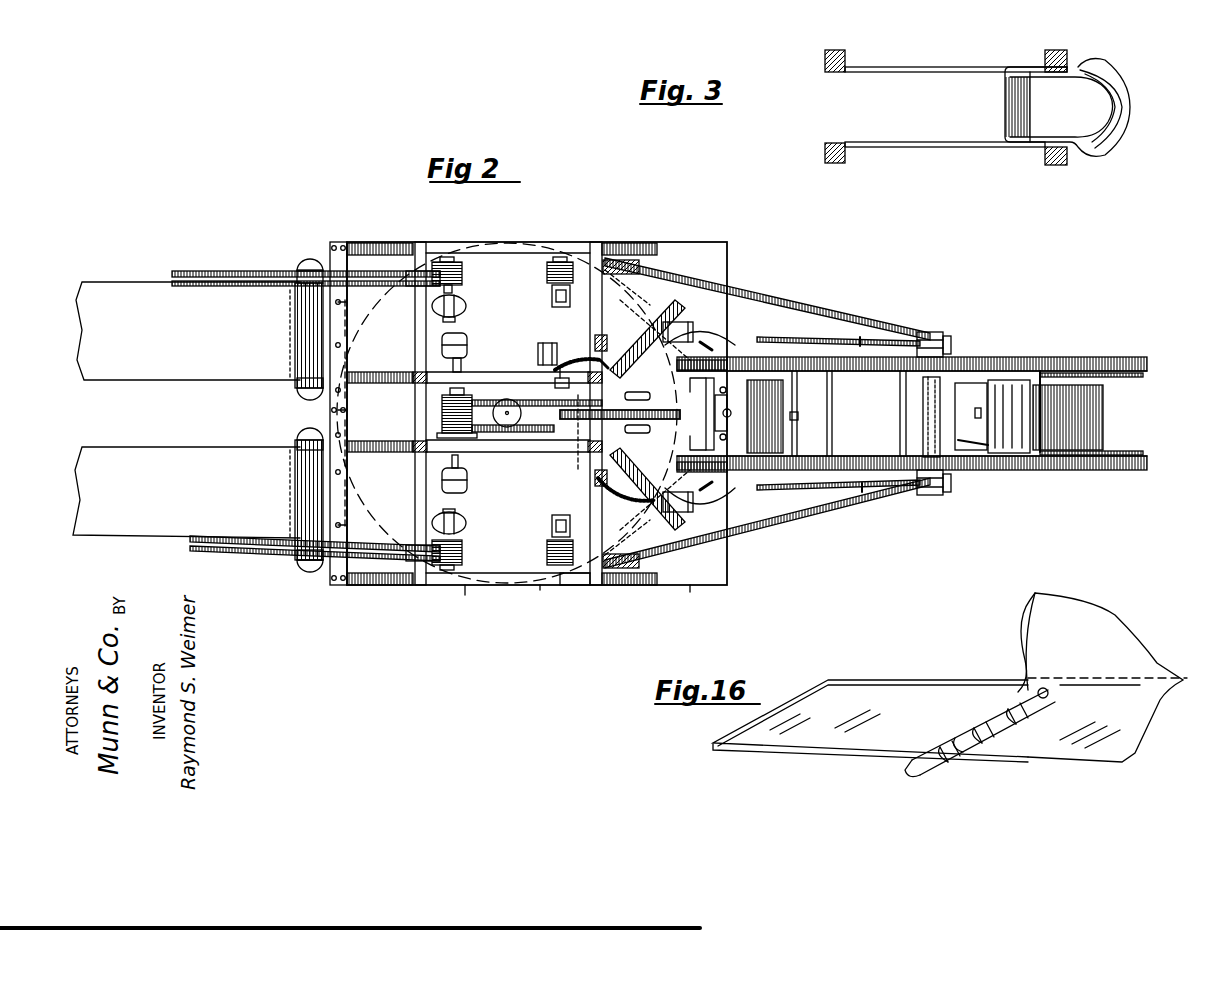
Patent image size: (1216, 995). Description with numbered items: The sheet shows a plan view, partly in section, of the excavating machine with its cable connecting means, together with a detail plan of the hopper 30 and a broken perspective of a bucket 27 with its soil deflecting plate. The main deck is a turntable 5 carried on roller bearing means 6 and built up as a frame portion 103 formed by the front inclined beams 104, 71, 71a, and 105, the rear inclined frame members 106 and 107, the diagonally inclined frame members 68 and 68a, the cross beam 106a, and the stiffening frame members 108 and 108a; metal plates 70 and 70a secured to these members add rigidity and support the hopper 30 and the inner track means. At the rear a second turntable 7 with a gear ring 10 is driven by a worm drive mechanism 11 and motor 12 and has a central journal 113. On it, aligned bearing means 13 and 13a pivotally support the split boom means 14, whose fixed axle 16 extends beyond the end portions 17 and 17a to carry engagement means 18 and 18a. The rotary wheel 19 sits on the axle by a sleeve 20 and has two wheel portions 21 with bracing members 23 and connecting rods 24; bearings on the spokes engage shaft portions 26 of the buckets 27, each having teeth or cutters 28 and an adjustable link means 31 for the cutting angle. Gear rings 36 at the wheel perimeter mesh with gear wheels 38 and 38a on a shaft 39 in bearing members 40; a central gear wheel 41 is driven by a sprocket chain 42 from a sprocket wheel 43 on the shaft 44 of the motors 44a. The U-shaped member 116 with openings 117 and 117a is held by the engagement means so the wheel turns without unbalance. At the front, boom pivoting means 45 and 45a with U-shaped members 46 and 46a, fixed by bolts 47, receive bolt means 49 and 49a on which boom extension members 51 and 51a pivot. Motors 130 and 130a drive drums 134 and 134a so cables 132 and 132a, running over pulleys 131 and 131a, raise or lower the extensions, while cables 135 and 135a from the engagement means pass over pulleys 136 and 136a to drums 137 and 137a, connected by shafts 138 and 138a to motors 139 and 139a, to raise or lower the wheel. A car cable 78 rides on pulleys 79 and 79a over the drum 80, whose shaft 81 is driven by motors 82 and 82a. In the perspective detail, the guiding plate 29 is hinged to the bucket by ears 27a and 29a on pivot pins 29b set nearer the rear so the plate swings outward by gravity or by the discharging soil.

In FIG. 2, the turntable 5 is at (690, 585).
In FIG. 2, the roller bearing means 6 is at (465, 590).
In FIG. 2, the second turntable 7 is at (578, 462).
In FIG. 2, the gear ring 10 is at (585, 482).
In FIG. 2, the worm drive mechanism 11 is at (536, 420).
In FIG. 2, the motor 12 is at (538, 355).
In FIG. 2, the bearing means 13 is at (699, 502).
In FIG. 2, the bearing means 13a is at (680, 330).
In FIG. 2, the split boom means 14 is at (822, 337).
In FIG. 2, the fixed axle 16 is at (923, 398).
In FIG. 2, the split boom end portion 17 is at (862, 487).
In FIG. 2, the split boom end portion 17a is at (860, 340).
In FIG. 2, the engagement means 18 is at (950, 490).
In FIG. 2, the engagement means 18a is at (950, 338).
In FIG. 2, the rotary wheel 19 is at (1066, 348).
In FIG. 2, the sleeve 20 is at (930, 432).
In FIG. 2, the wheel portions 21 is at (1147, 462).
In FIG. 2, the bracing members 23 is at (870, 456).
In FIG. 2, the connecting rods 24 is at (832, 420).
In FIG. 2, the shaft portions 26 is at (1040, 458).
In FIG. 2, the bucket 27 is at (1103, 418).
In FIG. 16, the bucket 27 is at (1088, 650).
In FIG. 16, the ears 27a is at (1020, 720).
In FIG. 2, the teeth or cutters 28 is at (1020, 420).
In FIG. 2, the guiding plate 29 is at (985, 437).
In FIG. 16, the guiding plate 29 is at (880, 696).
In FIG. 16, the ears 29a is at (1000, 745).
In FIG. 16, the pivot pins 29b is at (1045, 690).
In FIG. 3, the hopper 30 is at (1132, 107).
In FIG. 2, the adjustable link means 31 is at (975, 413).
In FIG. 2, the gear rings 36 is at (1102, 470).
In FIG. 2, the gear wheel 38 is at (677, 466).
In FIG. 2, the gear wheel 38a is at (677, 365).
In FIG. 2, the shaft 39 is at (726, 406).
In FIG. 2, the bearing members 40 is at (715, 485).
In FIG. 2, the gear wheel 41 is at (725, 417).
In FIG. 2, the sprocket chain 42 is at (690, 420).
In FIG. 2, the sprocket wheel 43 is at (567, 377).
In FIG. 2, the shaft 44 is at (614, 379).
In FIG. 2, the motors 44a is at (635, 480).
In FIG. 2, the boom pivoting means 45 is at (311, 575).
In FIG. 2, the boom pivoting means 45a is at (313, 250).
In FIG. 2, the U-shaped member 46 is at (320, 497).
In FIG. 2, the U-shaped member 46a is at (320, 326).
In FIG. 2, the bolts 47 is at (358, 524).
In FIG. 2, the bolt means 49 is at (300, 435).
In FIG. 2, the bolt means 49a is at (305, 398).
In FIG. 2, the boom extension member 51 is at (154, 478).
In FIG. 2, the boom extension member 51a is at (146, 350).
In FIG. 2, the frame member 68 is at (599, 483).
In FIG. 3, the frame member 68 is at (1058, 165).
In FIG. 2, the frame member 68a is at (596, 348).
In FIG. 3, the frame member 68a is at (1056, 50).
In FIG. 3, the plate 70 is at (947, 147).
In FIG. 3, the plate 70a is at (943, 67).
In FIG. 2, the frame member 71 is at (415, 448).
In FIG. 3, the frame member 71 is at (836, 163).
In FIG. 2, the frame member 71a is at (412, 380).
In FIG. 3, the frame member 71a is at (835, 50).
In FIG. 2, the cable 78 is at (442, 413).
In FIG. 2, the pulley 79 is at (632, 438).
In FIG. 2, the pulley 79a is at (647, 387).
In FIG. 2, the drum 80 is at (437, 435).
In FIG. 2, the shaft 81 is at (462, 368).
In FIG. 2, the motor 82 is at (467, 479).
In FIG. 2, the motor 82a is at (467, 343).
In FIG. 2, the frame portion 103 is at (544, 598).
In FIG. 2, the beam 104 is at (383, 585).
In FIG. 2, the beam 105 is at (378, 243).
In FIG. 2, the frame member 106 is at (637, 585).
In FIG. 2, the cross beam 106a is at (572, 585).
In FIG. 2, the frame member 107 is at (628, 243).
In FIG. 2, the frame member 108 is at (655, 512).
In FIG. 2, the frame member 108a is at (648, 325).
In FIG. 2, the central journal 113 is at (620, 405).
In FIG. 2, the U-shaped member 116 is at (817, 490).
In FIG. 2, the opening 117 is at (925, 495).
In FIG. 2, the opening 117a is at (925, 332).
In FIG. 2, the motor 130 is at (467, 522).
In FIG. 2, the motor 130a is at (467, 305).
In FIG. 2, the pulley 131 is at (415, 546).
In FIG. 2, the pulley 131a is at (412, 283).
In FIG. 2, the boom-supporting cable 132 is at (255, 555).
In FIG. 2, the boom-supporting cable 132a is at (228, 271).
In FIG. 2, the drum 134 is at (463, 543).
In FIG. 2, the drum 134a is at (465, 268).
In FIG. 2, the cable 135 is at (768, 530).
In FIG. 2, the cable 135a is at (765, 300).
In FIG. 2, the pulley 136 is at (640, 561).
In FIG. 2, the pulley 136a is at (640, 266).
In FIG. 2, the drum 137 is at (548, 552).
In FIG. 2, the drum 137a is at (550, 283).
In FIG. 2, the shaft 138 is at (626, 537).
In FIG. 2, the shaft 138a is at (627, 289).
In FIG. 2, the motor 139 is at (553, 527).
In FIG. 2, the motor 139a is at (553, 300).